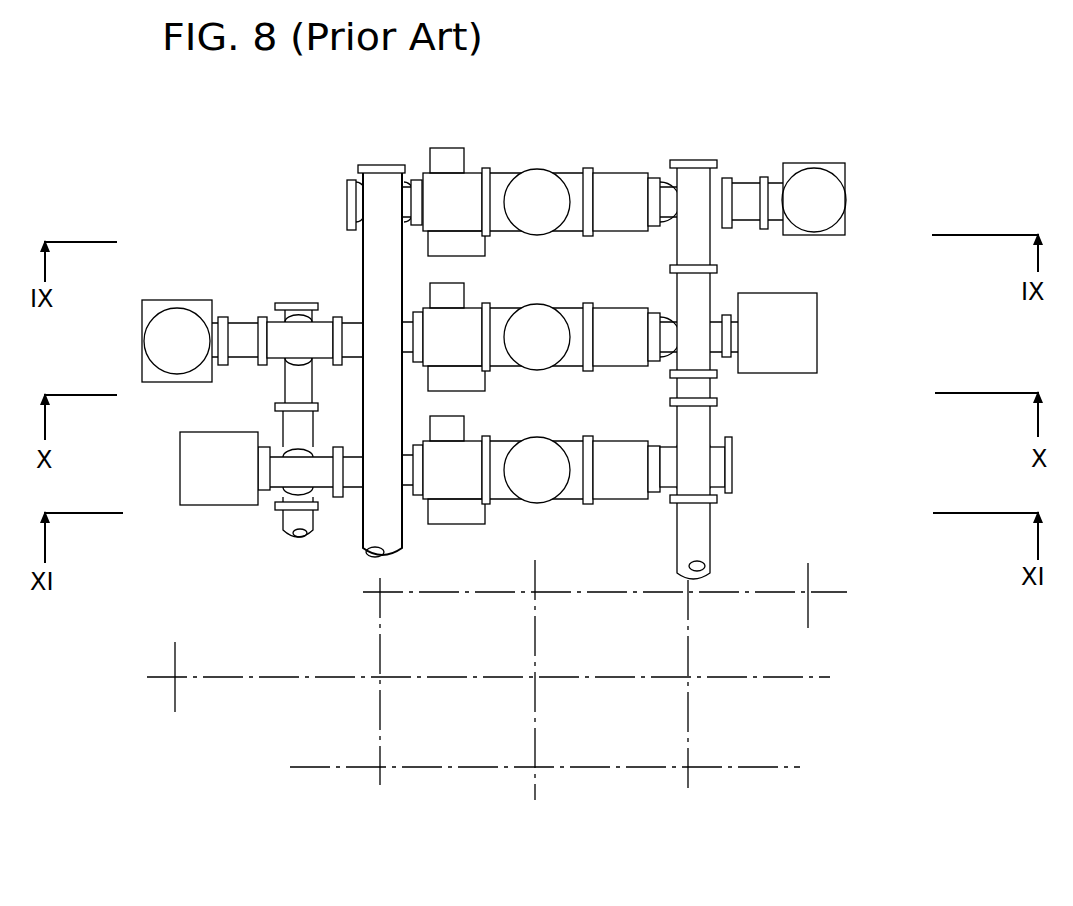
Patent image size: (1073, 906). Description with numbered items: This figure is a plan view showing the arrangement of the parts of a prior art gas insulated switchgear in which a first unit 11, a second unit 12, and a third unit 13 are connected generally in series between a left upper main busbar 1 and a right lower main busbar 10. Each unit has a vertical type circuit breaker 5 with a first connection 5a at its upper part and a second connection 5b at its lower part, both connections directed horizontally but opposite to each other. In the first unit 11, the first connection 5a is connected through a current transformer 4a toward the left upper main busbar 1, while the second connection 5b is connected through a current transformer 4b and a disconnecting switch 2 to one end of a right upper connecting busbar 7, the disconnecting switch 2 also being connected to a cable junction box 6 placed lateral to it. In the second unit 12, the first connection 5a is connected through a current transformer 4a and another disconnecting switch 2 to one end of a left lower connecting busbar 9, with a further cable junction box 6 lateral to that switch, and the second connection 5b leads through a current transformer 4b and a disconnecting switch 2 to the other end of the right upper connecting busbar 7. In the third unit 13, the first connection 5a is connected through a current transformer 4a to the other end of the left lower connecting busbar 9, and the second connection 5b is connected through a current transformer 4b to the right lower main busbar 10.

The left upper main busbar 1 is at (366, 165).
The disconnecting switch 2 is at (310, 303).
The current transformer 4a is at (478, 172).
The current transformer 4b is at (620, 172).
The vertical type circuit breaker 5 is at (540, 172).
The first connection 5a is at (488, 170).
The second connection 5b is at (595, 172).
The cable junction box 6 is at (175, 300).
The right upper connecting busbar 7 is at (718, 238).
The left lower connecting busbar 9 is at (285, 375).
The right lower main busbar 10 is at (708, 548).
The first unit 11 is at (870, 192).
The second unit 12 is at (830, 327).
The third unit 13 is at (816, 463).